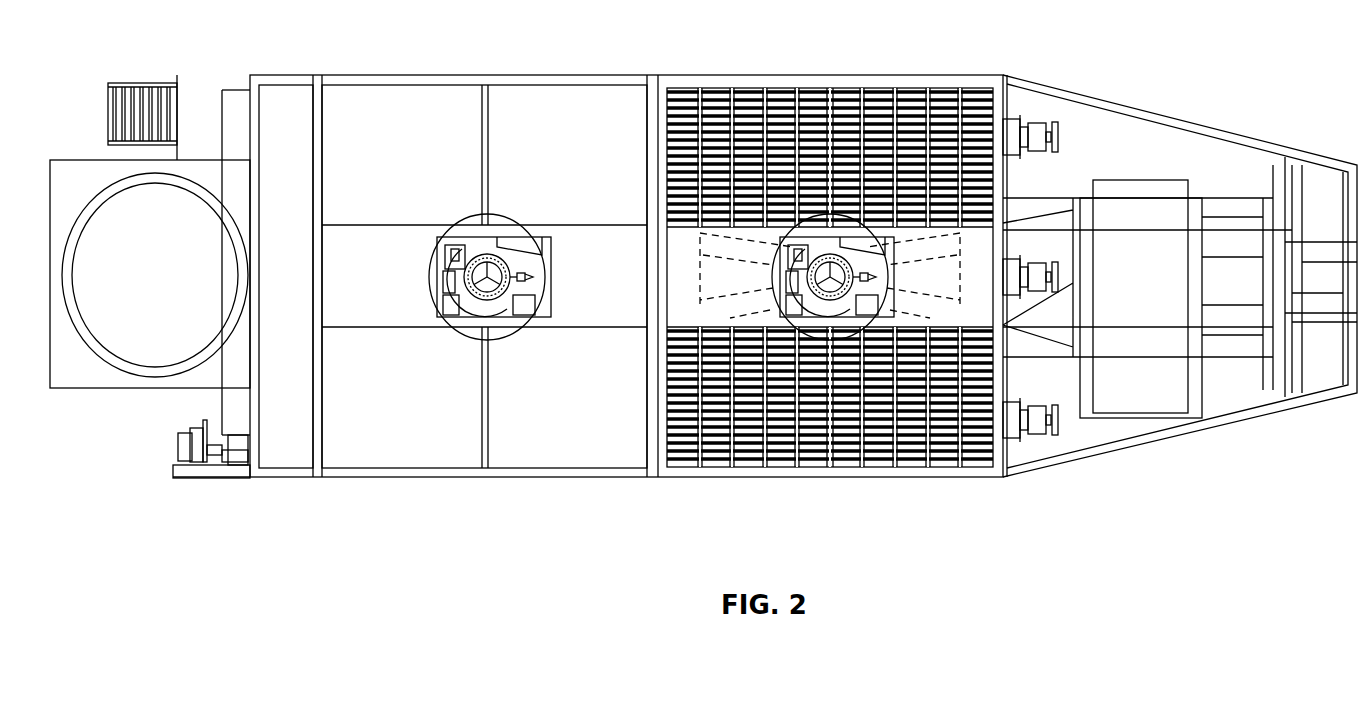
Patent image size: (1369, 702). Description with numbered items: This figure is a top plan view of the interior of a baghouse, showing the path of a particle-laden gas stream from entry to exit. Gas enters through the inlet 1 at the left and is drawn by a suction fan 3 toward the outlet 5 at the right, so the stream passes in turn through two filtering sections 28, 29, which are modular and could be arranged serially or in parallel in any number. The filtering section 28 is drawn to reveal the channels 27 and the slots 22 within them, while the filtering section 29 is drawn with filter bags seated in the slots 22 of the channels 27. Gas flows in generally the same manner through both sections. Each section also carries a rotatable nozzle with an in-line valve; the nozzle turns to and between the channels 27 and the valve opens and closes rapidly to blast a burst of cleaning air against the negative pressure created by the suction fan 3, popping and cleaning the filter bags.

The inlet 1 is at (155, 292).
The suction fan 3 is at (1158, 243).
The outlet 5 is at (1037, 238).
The slots 22 is at (717, 95).
The channels 27 is at (702, 236).
The filtering section 28 is at (655, 478).
The filtering section 29 is at (655, 478).